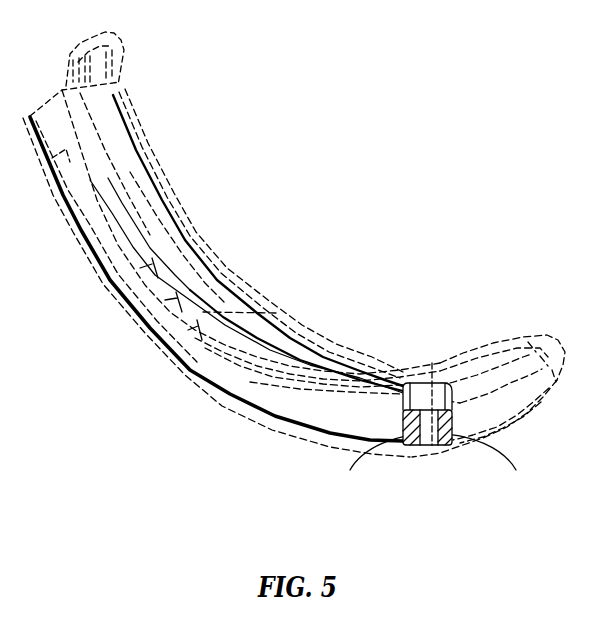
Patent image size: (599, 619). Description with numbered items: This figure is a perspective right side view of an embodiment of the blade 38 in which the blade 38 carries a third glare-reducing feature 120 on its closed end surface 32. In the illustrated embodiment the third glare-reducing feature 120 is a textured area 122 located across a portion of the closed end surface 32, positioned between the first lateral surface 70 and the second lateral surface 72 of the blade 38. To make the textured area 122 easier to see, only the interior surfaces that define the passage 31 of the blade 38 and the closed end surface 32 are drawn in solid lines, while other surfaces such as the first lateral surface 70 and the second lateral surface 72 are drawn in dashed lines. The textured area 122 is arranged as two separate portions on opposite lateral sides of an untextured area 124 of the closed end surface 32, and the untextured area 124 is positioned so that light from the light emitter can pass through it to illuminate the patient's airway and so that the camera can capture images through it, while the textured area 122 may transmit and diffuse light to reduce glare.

The passage 31 is at (120, 258).
The first lateral surface 70 is at (281, 398).
The second lateral surface 72 is at (373, 357).
The untextured area 124 is at (435, 360).
The blade 38 is at (487, 294).
The textured area 122 is at (433, 468).
The closed end surface 32 is at (433, 447).
The third glare-reducing feature 120 is at (459, 505).